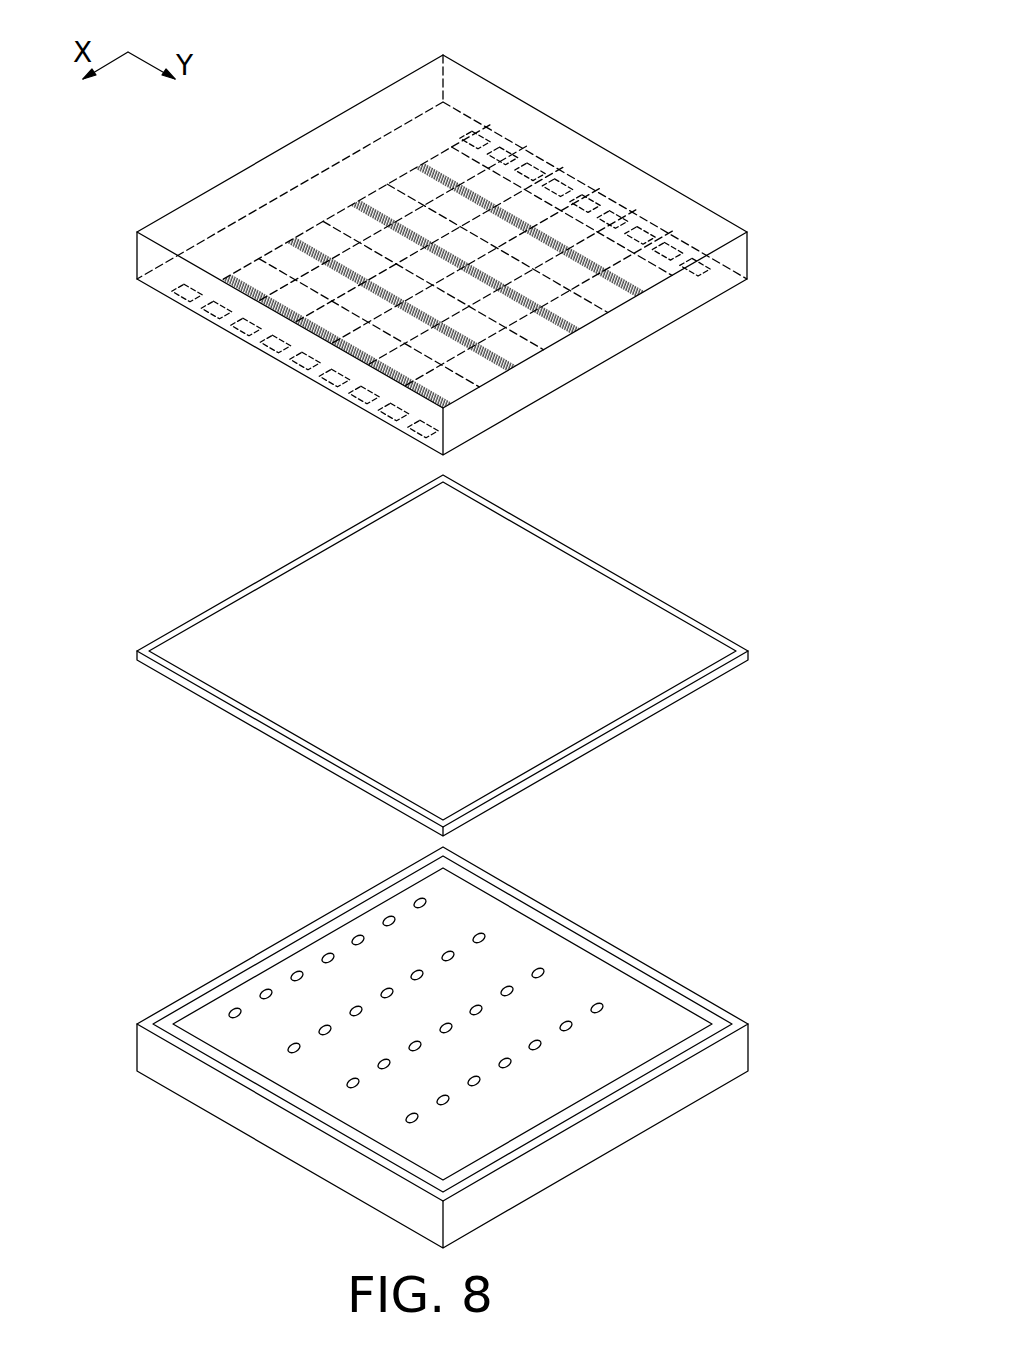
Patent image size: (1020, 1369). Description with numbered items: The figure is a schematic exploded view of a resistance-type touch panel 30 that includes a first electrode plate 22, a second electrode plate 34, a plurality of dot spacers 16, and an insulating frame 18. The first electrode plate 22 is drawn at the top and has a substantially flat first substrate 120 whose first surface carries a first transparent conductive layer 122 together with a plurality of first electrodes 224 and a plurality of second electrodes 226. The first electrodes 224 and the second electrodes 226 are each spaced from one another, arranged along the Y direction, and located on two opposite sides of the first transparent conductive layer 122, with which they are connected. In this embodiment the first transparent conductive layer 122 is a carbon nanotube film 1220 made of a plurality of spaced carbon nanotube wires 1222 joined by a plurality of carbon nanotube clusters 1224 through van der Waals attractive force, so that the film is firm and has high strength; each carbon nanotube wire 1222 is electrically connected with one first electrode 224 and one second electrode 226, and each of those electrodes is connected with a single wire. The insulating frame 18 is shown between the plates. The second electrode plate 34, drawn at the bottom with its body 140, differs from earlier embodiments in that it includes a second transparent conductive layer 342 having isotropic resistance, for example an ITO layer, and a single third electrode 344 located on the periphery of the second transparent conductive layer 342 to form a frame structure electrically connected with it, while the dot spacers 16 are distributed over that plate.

The resistance-type touch panel 30 is at (532, 41).
The first electrode plate 22 is at (682, 178).
The first substrate 120 is at (683, 298).
The first transparent conductive layer 122 is at (315, 200).
The carbon nanotube film 1220 is at (660, 418).
The carbon nanotube wires 1222 is at (452, 365).
The carbon nanotube clusters 1224 is at (510, 362).
The second electrodes 226 is at (488, 128).
The first electrodes 224 is at (188, 300).
The insulating frame 18 is at (672, 603).
The second electrode plate 34 is at (646, 952).
The substrate body 140 is at (623, 1122).
The second transparent conductive layer 342 is at (238, 982).
The third electrode 344 is at (190, 1005).
The dot spacers 16 is at (297, 975).